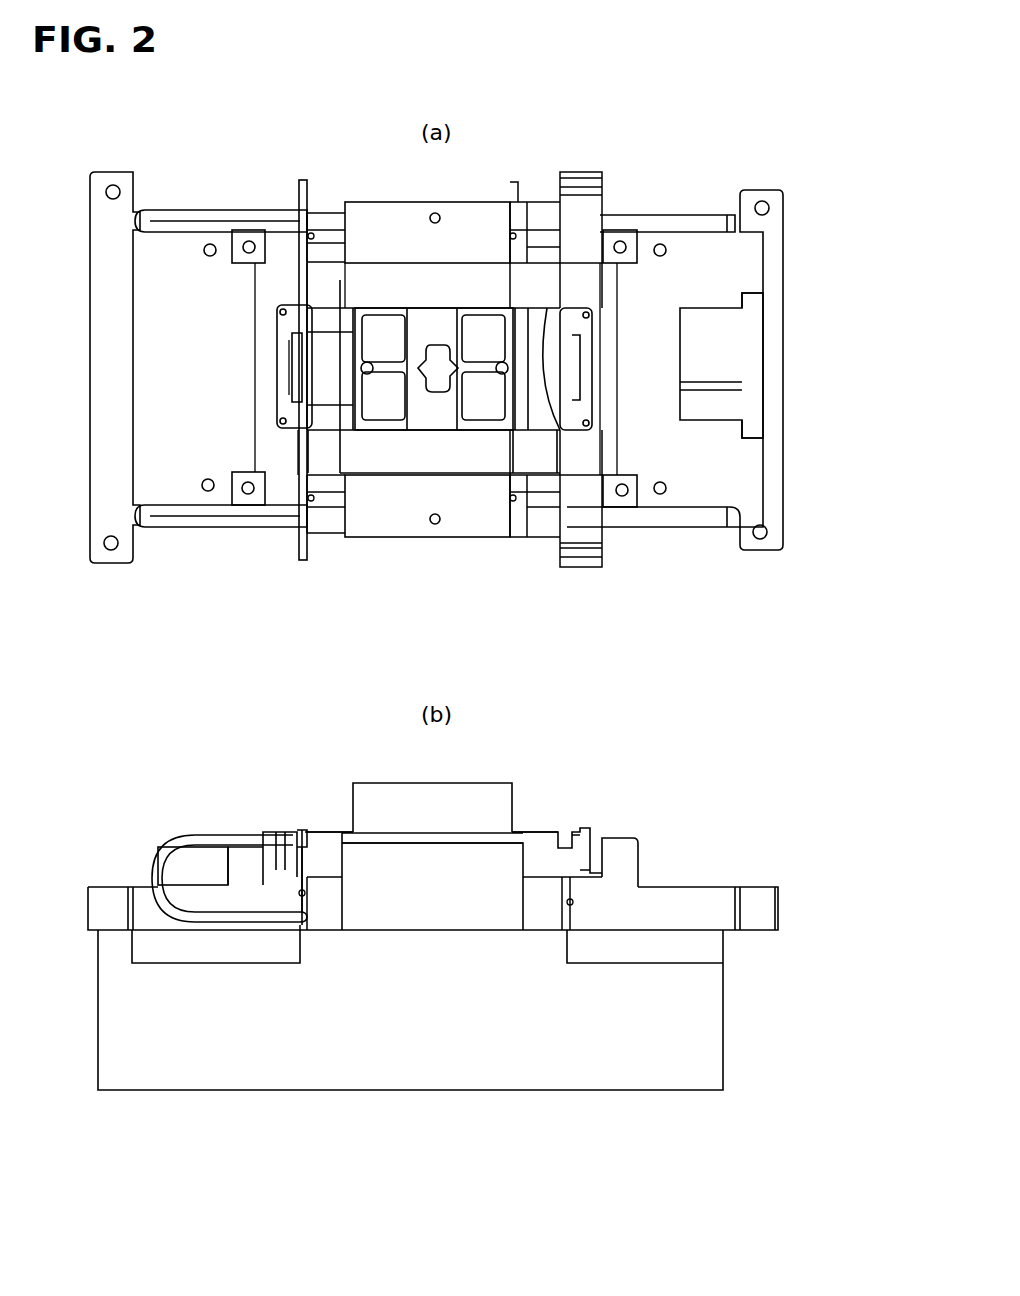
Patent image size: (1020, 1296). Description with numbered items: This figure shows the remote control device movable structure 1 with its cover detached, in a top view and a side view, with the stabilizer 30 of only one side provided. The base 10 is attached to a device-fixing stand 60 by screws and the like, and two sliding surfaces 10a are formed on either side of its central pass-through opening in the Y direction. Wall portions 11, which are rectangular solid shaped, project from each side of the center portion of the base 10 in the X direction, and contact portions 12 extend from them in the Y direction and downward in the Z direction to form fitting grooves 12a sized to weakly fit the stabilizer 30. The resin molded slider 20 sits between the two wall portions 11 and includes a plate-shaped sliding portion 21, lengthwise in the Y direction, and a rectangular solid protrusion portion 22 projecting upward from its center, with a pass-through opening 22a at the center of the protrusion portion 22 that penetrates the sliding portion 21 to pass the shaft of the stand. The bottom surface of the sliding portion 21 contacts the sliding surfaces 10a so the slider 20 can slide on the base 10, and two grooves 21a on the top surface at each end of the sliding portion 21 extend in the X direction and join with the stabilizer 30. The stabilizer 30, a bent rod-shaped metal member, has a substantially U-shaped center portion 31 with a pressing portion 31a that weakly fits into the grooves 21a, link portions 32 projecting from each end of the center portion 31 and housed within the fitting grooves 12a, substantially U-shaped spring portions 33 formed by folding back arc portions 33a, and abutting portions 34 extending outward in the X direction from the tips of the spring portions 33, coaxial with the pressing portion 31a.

The remote control device movable structure 1 is at (683, 185).
The base 10 is at (148, 207).
The sliding surfaces 10a is at (265, 292).
The wall portions 11 is at (428, 203).
The contact portions 12 is at (333, 230).
The fitting grooves 12a is at (314, 237).
The slider 20 is at (402, 306).
The sliding portion 21 is at (278, 417).
The grooves 21a is at (290, 370).
The protrusion portion 22 is at (367, 432).
The pass-through opening 22a is at (438, 393).
The stabilizer 30 is at (297, 451).
The center portion 31 is at (308, 286).
The pressing portion 31a is at (292, 341).
The link portions 32 is at (310, 925).
The spring portions 33 is at (226, 207).
The arc portions 33a is at (151, 868).
The abutting portions 34 is at (298, 205).
The device-fixing stand 60 is at (724, 983).